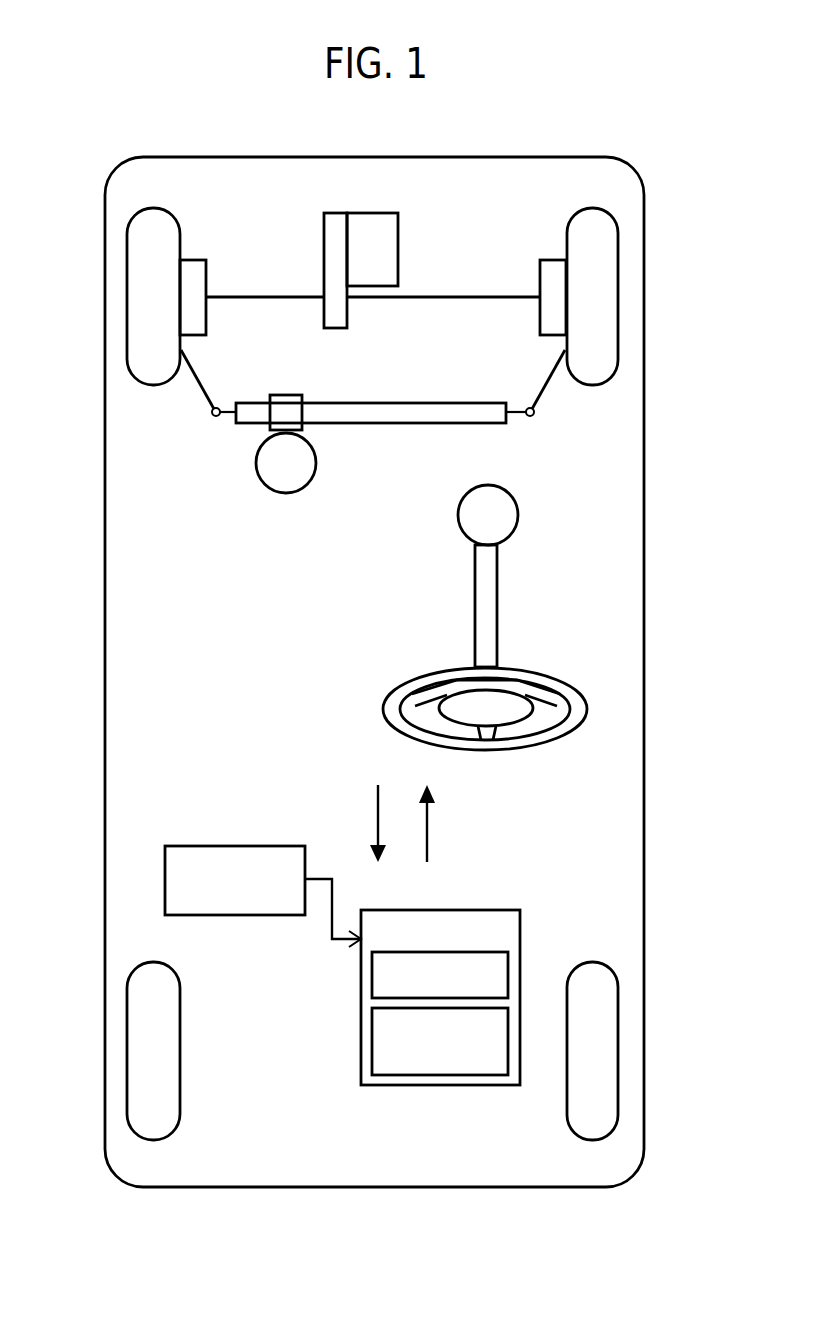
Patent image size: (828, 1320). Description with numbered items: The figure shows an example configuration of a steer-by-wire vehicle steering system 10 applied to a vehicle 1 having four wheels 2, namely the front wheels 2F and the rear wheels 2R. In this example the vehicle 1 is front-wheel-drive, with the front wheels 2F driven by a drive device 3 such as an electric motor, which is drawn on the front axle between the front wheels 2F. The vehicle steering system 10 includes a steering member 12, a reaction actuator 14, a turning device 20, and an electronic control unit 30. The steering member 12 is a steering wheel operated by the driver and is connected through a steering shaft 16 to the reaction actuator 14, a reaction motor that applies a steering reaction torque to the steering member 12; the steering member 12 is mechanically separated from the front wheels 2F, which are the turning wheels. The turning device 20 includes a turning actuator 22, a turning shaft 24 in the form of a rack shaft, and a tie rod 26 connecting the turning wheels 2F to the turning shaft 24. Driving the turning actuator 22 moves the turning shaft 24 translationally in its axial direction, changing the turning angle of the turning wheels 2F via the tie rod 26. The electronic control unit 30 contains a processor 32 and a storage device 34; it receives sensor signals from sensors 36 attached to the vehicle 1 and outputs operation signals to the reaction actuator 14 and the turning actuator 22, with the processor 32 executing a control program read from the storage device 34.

The vehicle 1 is at (590, 157).
The wheels 2 is at (637, 226).
The front wheels 2F is at (374, 294).
The rear wheels 2R is at (127, 1052).
The drive device 3 is at (378, 213).
The vehicle steering system 10 is at (372, 676).
The steering member 12 is at (411, 690).
The reaction actuator 14 is at (518, 508).
The steering shaft 16 is at (498, 600).
The turning device 20 is at (372, 438).
The turning actuator 22 is at (317, 461).
The turning shaft 24 is at (388, 403).
The tie rod 26 is at (198, 385).
The electronic control unit 30 is at (406, 973).
The processor 32 is at (372, 978).
The storage device 34 is at (372, 1038).
The sensors 36 is at (255, 846).